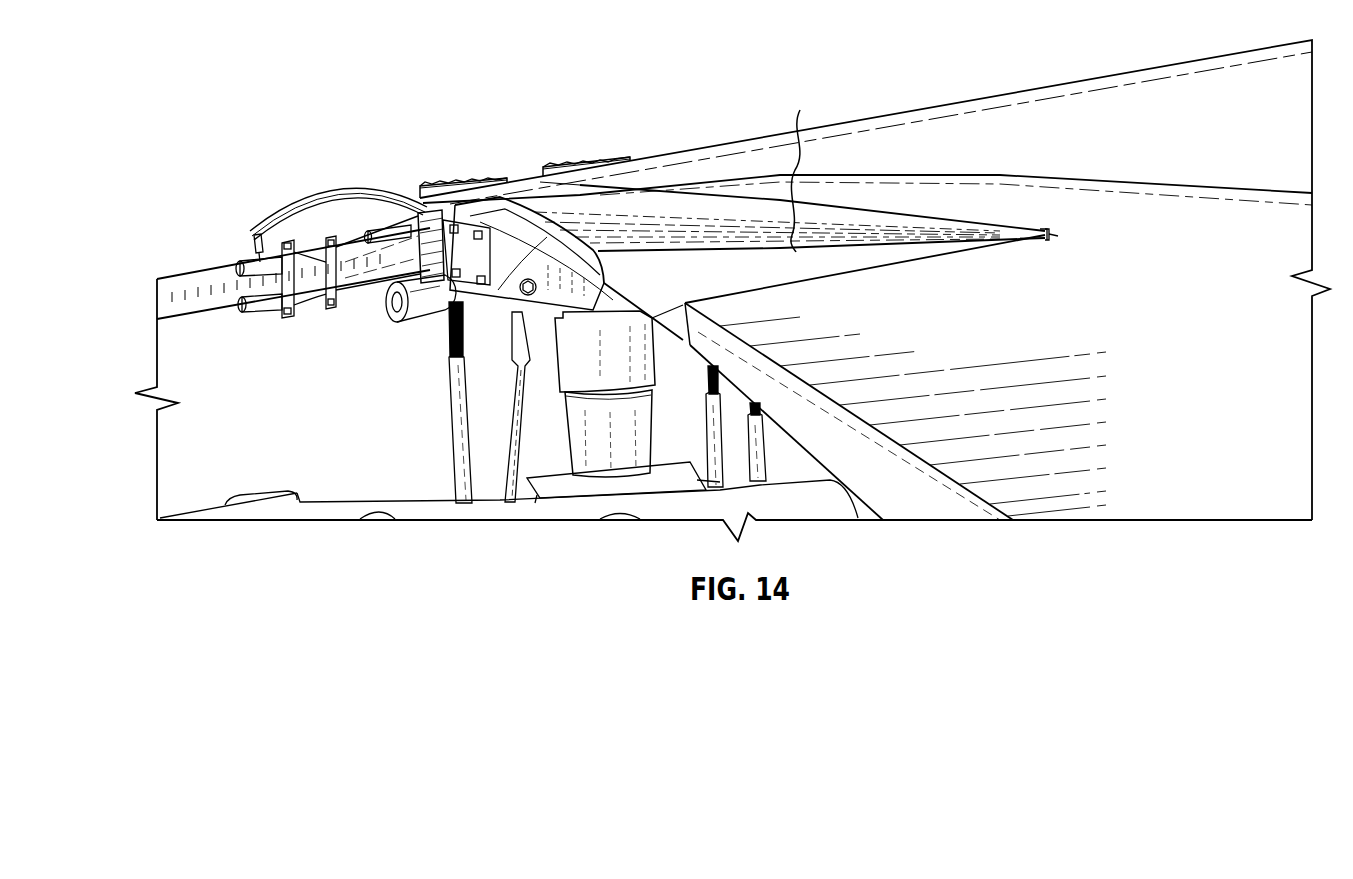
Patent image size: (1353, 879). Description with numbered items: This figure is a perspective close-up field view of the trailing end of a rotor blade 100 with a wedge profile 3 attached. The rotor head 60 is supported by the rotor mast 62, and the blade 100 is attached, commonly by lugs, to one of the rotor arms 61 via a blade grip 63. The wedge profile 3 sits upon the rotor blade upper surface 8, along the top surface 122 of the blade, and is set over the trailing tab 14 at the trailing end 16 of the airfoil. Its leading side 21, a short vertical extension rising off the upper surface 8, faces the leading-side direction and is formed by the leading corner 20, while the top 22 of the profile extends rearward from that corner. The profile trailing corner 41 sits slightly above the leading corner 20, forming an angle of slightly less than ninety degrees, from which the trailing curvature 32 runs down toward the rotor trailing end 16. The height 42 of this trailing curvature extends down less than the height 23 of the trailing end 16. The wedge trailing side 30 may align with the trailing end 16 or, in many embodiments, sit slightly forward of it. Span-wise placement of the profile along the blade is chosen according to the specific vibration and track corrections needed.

The wedge profile 3 is at (1030, 240).
The upper surface 8 is at (881, 203).
The trailing tab 14 is at (995, 326).
The trailing end 16 is at (732, 363).
The leading corner 20 is at (1044, 229).
The leading side 21 is at (1058, 236).
The top 22 is at (670, 182).
The height of trailing end 23 is at (650, 336).
The wedge trailing side 30 is at (452, 315).
The trailing curvature 32 is at (612, 270).
The profile trailing corner 41 is at (435, 190).
The height 42 is at (537, 315).
The rotor head 60 is at (498, 138).
The rotor arms 61 is at (370, 300).
The rotor mast 62 is at (572, 428).
The blade grip 63 is at (250, 228).
The rotor blade 100 is at (193, 318).
The top surface 122 is at (802, 170).